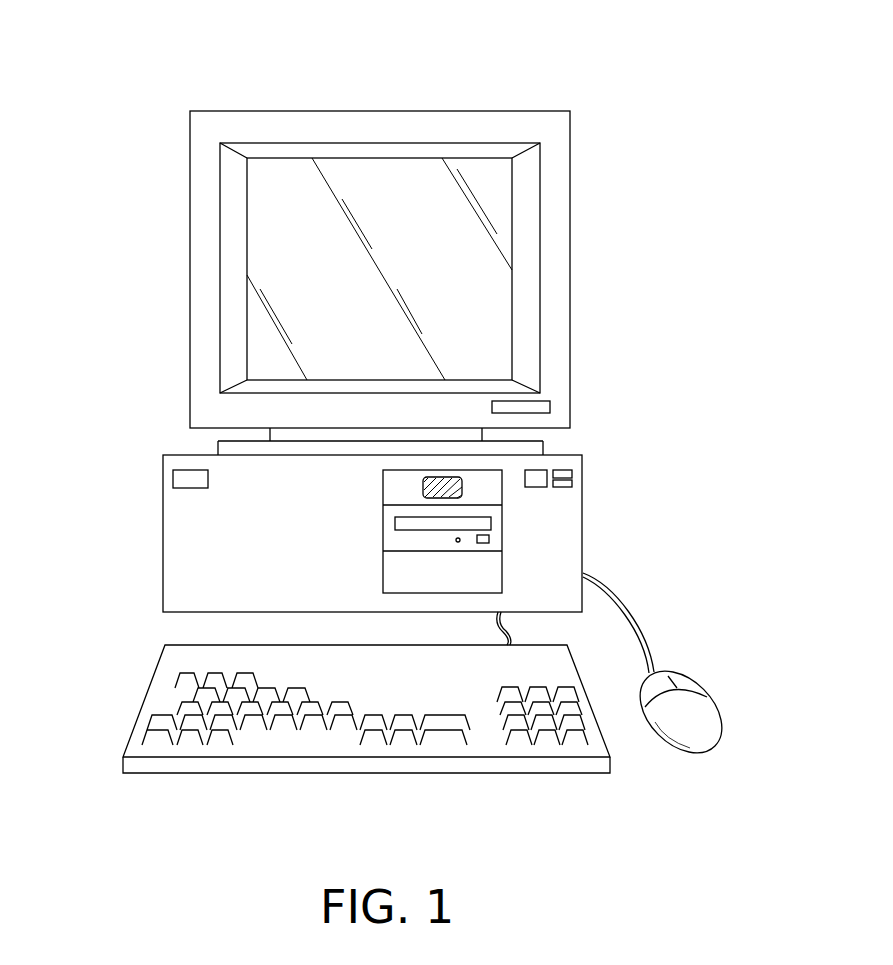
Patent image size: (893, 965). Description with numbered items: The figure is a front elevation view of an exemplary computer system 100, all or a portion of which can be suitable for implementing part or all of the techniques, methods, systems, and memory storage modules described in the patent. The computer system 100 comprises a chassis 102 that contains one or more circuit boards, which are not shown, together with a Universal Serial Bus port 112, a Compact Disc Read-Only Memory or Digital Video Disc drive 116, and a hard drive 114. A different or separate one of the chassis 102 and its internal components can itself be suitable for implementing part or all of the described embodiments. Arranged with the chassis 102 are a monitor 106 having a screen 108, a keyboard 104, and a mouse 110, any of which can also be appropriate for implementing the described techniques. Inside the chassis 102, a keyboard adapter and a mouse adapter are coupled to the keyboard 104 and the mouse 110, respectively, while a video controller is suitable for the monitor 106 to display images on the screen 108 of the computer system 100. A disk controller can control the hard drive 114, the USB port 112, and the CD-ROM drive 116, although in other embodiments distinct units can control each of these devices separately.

The computer system 100 is at (562, 87).
The chassis 102 is at (163, 532).
The keyboard 104 is at (143, 700).
The monitor 106 is at (266, 110).
The screen 108 is at (296, 275).
The mouse 110 is at (700, 702).
The Universal Serial Bus (USB) port 112 is at (463, 486).
The hard drive 114 is at (493, 570).
The Compact Disc Read-Only Memory (CD-ROM) and/or Digital Video Disc (DVD) drive 116 is at (495, 530).